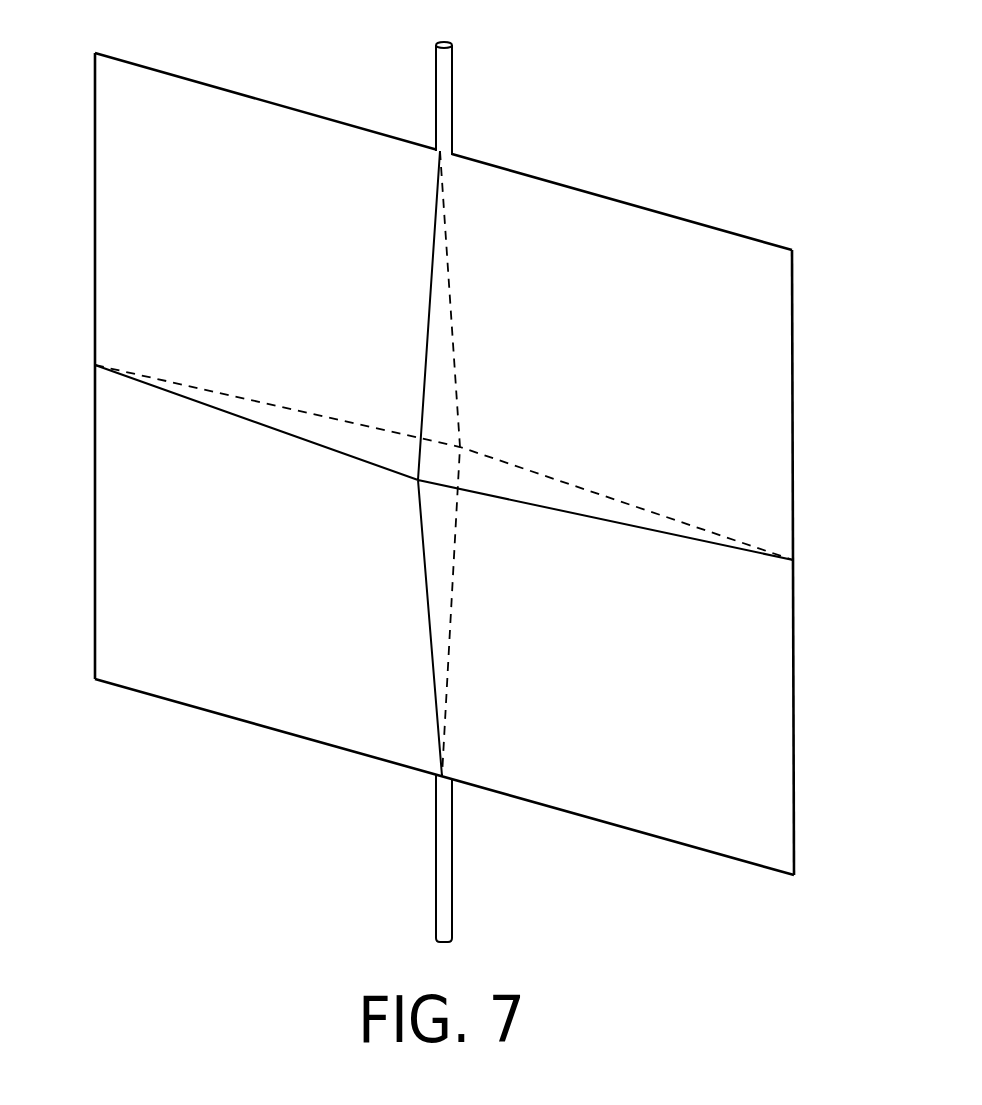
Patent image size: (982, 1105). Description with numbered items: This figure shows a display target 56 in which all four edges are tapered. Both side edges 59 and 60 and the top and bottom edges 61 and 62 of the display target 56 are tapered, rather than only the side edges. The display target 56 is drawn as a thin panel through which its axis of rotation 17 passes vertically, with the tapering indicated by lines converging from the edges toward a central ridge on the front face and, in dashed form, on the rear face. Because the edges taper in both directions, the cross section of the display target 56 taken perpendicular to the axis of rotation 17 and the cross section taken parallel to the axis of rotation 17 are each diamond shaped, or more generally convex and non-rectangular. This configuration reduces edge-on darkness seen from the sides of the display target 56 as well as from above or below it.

The axis of rotation 17 is at (447, 58).
The display target 56 is at (447, 477).
The side edge 59 is at (95, 305).
The side edge 60 is at (793, 478).
The top edge 61 is at (588, 192).
The bottom edge 62 is at (588, 820).